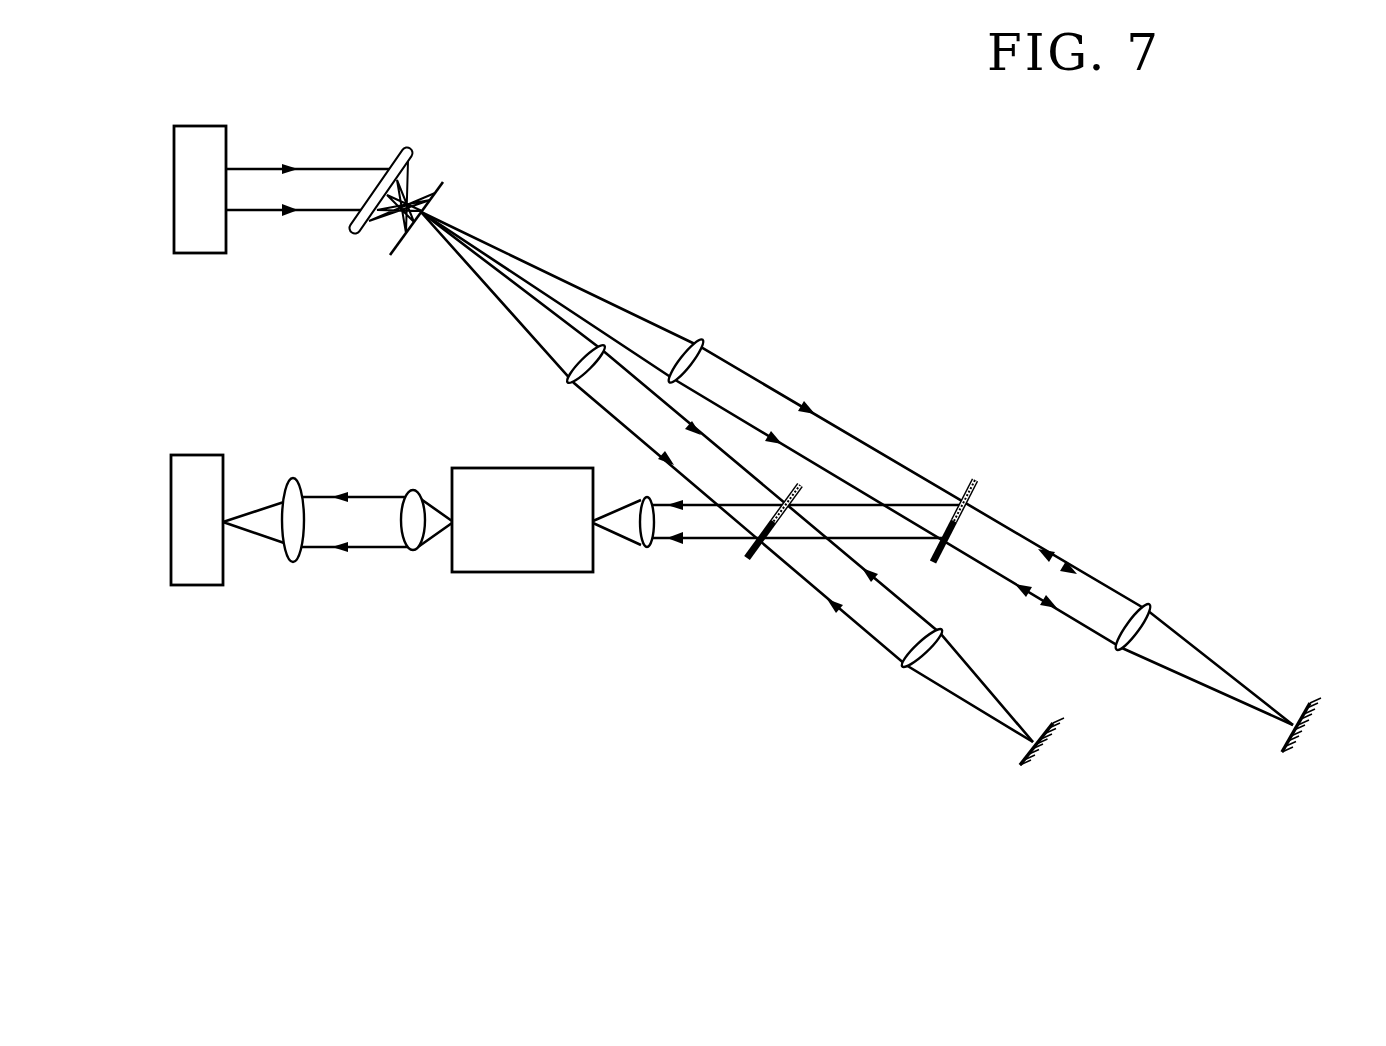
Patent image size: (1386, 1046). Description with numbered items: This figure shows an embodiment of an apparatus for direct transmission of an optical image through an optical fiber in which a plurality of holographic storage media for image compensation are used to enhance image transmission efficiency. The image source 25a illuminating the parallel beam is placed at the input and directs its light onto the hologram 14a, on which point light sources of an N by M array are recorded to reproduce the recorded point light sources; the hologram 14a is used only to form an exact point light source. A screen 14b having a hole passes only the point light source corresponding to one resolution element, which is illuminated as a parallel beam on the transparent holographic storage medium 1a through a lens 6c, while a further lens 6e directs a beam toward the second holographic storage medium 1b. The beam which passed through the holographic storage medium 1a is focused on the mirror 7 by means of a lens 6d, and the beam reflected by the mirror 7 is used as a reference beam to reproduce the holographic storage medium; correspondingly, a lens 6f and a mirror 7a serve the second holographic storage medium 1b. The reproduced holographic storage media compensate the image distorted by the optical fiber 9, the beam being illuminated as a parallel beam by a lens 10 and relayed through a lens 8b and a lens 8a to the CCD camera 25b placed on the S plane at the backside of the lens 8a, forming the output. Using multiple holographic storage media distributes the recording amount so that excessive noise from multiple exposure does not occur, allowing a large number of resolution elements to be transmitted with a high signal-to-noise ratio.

The image source 25a is at (191, 258).
The hologram 14a is at (402, 146).
The screen having a hole 14b is at (386, 257).
The lens 6c is at (561, 383).
The lens 6d is at (898, 673).
The lens 6e is at (692, 336).
The lens 6f is at (1116, 657).
The transparent holographic storage medium 1a is at (748, 565).
The holographic storage medium 1b is at (961, 478).
The mirror 7 is at (1019, 769).
The mirror 7a is at (1305, 692).
The lens 10 is at (646, 560).
The optical fiber 9 is at (517, 576).
The lens 8b is at (415, 558).
The lens 8a is at (293, 569).
The CCD camera 25b is at (188, 590).